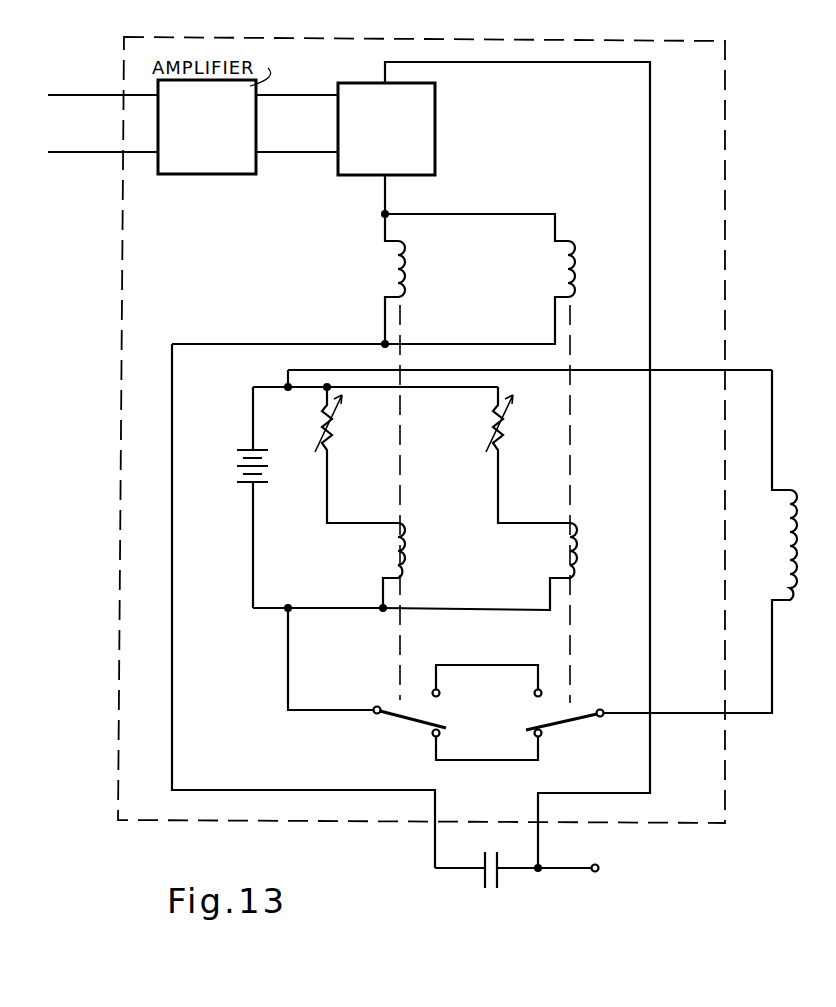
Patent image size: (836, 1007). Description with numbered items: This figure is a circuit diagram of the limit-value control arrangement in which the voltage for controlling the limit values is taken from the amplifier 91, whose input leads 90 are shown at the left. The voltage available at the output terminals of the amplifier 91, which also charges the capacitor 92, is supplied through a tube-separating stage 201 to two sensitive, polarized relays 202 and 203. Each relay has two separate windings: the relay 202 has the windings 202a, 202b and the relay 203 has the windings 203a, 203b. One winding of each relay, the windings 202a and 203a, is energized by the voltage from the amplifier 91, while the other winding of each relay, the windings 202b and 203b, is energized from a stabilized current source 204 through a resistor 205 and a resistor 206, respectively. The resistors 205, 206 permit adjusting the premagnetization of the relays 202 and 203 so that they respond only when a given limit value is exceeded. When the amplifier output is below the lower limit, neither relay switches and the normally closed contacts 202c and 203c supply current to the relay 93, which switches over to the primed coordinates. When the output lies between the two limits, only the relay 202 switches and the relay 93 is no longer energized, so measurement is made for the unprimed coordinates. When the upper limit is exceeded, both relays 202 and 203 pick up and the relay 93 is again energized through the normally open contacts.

The input leads 90 is at (73, 150).
The amplifier 91 is at (692, 42).
The capacitor 92 is at (487, 884).
The relay 93 is at (790, 546).
The tube-separating stage 201 is at (365, 88).
The polarized relay 202 is at (406, 330).
The winding 202a is at (396, 254).
The winding 202b is at (395, 543).
The normally closed contact 202c is at (425, 730).
The polarized relay 203 is at (576, 330).
The winding 203a is at (566, 270).
The winding 203b is at (568, 538).
The normally closed contact 203c is at (556, 728).
The stabilized current source 204 is at (244, 486).
The resistor 205 is at (322, 415).
The resistor 206 is at (493, 420).